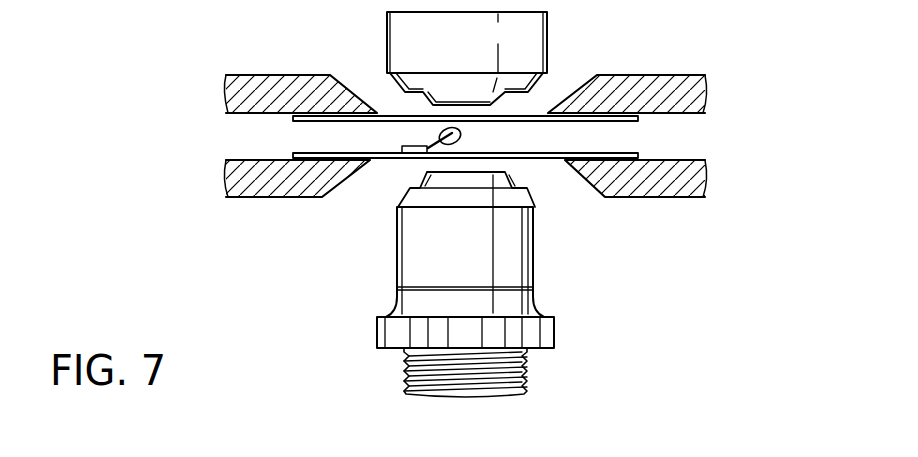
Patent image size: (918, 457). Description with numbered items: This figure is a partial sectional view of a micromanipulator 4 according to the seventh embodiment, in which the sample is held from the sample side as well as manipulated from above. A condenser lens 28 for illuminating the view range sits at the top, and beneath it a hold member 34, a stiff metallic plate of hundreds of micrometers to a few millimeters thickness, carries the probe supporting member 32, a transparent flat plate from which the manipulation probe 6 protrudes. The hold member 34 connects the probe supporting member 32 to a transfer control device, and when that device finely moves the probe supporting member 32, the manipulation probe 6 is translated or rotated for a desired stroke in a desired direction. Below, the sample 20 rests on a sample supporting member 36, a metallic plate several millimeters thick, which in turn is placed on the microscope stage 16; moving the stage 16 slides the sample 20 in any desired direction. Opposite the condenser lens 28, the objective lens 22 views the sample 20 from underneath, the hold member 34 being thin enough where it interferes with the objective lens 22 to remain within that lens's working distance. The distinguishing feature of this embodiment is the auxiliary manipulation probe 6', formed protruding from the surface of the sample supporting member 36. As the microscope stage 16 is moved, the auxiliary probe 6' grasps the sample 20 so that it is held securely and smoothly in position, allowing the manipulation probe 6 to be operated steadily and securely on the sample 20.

The micromanipulator 4 is at (354, 71).
The manipulation probe 6 is at (445, 91).
The auxiliary manipulation probe 6' is at (400, 135).
The microscope stage 16 is at (678, 197).
The sample 20 is at (480, 151).
The objective lens 22 is at (397, 297).
The condenser lens 28 is at (549, 38).
The probe supporting member 32 is at (517, 116).
The hold member 34 is at (677, 75).
The sample supporting member 36 is at (537, 162).